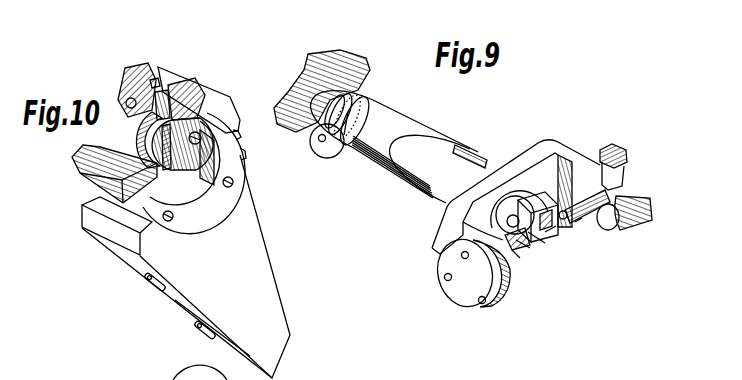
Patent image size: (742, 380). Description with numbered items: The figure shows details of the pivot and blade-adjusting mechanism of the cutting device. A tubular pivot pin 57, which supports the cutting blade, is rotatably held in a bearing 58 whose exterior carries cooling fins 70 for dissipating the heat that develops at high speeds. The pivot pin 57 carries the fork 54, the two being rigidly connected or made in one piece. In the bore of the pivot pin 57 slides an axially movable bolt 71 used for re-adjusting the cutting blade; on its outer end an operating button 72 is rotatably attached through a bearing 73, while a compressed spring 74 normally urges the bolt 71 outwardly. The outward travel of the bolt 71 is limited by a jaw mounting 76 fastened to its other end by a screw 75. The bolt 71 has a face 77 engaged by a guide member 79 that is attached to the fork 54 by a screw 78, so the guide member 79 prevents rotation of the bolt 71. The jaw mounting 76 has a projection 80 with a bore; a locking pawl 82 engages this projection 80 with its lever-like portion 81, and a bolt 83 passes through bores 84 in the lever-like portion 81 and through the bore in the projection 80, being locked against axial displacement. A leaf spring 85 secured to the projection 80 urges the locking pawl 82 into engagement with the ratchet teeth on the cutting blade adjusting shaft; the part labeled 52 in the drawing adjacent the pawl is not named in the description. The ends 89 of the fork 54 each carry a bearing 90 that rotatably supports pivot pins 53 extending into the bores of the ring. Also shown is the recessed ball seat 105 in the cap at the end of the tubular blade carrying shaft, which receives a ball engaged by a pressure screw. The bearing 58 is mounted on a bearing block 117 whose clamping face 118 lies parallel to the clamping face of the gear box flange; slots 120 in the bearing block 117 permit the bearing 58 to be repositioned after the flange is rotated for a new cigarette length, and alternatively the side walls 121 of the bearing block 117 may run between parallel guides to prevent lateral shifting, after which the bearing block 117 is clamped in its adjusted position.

In FIG. 9, the pivot pin 52 is at (521, 243).
In FIG. 9, the pivot pins 53 is at (590, 203).
In FIG. 9, the fork 54 is at (565, 147).
In FIG. 9, the pivot pin 57 is at (446, 132).
In FIG. 10, the bearing 58 is at (166, 92).
In FIG. 10, the cooling fins 70 is at (235, 112).
In FIG. 9, the axially slidable bolt 71 is at (343, 140).
In FIG. 9, the operating button 72 is at (314, 146).
In FIG. 9, the bearing 73 is at (336, 76).
In FIG. 9, the compressed spring 74 is at (353, 97).
In FIG. 9, the screw 75 is at (582, 221).
In FIG. 9, the jaw mounting 76 is at (550, 231).
In FIG. 9, the face 77 is at (533, 200).
In FIG. 9, the screw 78 is at (566, 215).
In FIG. 9, the guide member 79 is at (546, 208).
In FIG. 9, the projection 80 is at (502, 215).
In FIG. 9, the lever-like portion 81 is at (508, 238).
In FIG. 9, the locking pawl 82 is at (535, 250).
In FIG. 9, the bolt 83 is at (513, 215).
In FIG. 9, the bores 84 is at (511, 204).
In FIG. 9, the leaf spring 85 is at (519, 249).
In FIG. 9, the ends of the fork 89 is at (473, 308).
In FIG. 9, the bearing 90 is at (608, 218).
In FIG. 10, the recessed ball seat 105 is at (180, 374).
In FIG. 10, the bearing block 117 is at (265, 241).
In FIG. 10, the clamping face 118 is at (122, 253).
In FIG. 10, the slots 120 is at (153, 280).
In FIG. 10, the side walls 121 is at (240, 292).